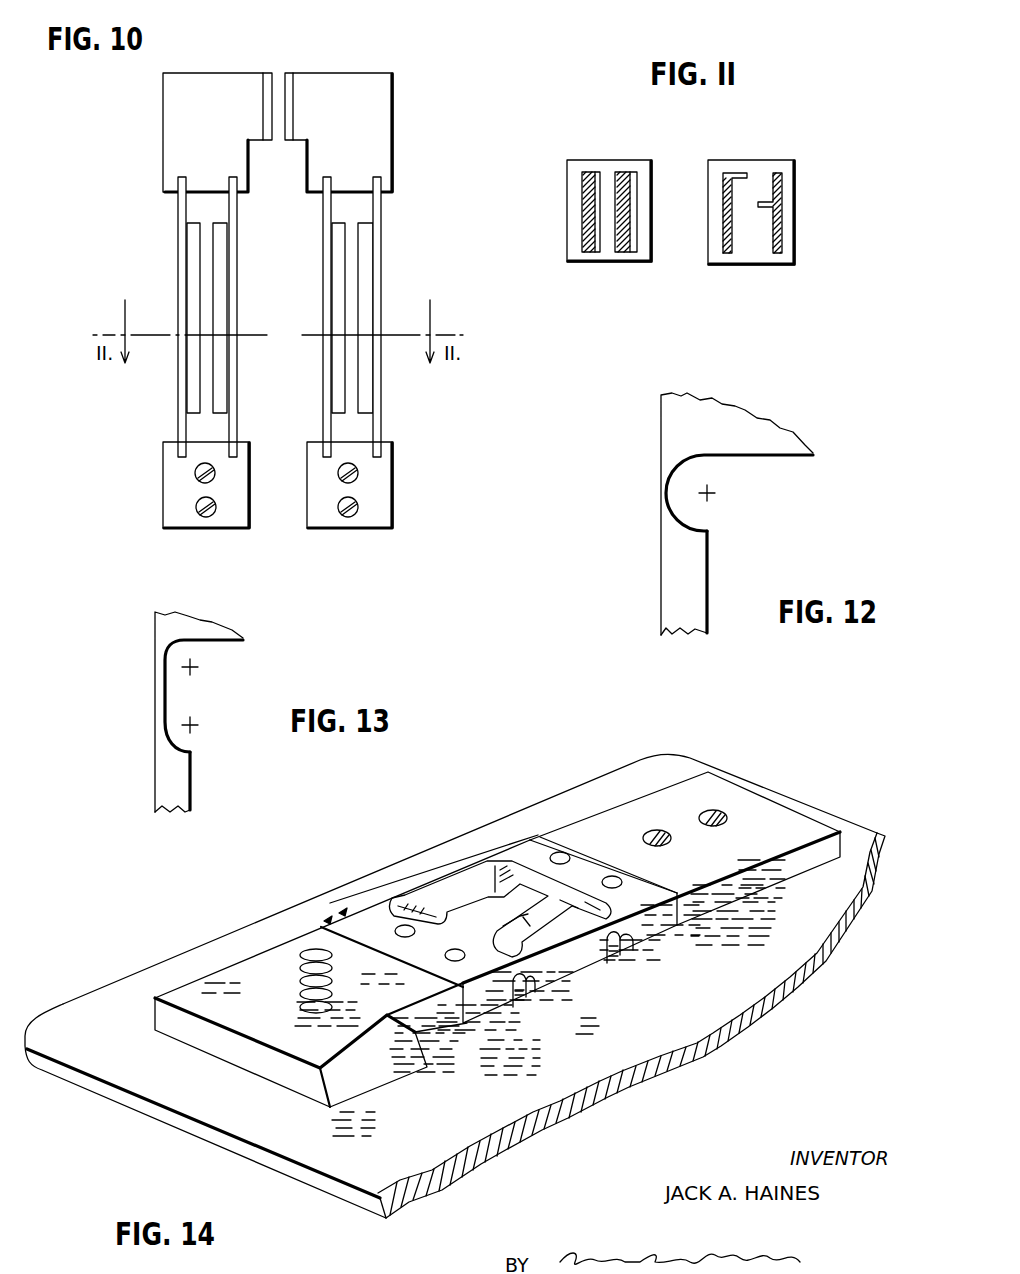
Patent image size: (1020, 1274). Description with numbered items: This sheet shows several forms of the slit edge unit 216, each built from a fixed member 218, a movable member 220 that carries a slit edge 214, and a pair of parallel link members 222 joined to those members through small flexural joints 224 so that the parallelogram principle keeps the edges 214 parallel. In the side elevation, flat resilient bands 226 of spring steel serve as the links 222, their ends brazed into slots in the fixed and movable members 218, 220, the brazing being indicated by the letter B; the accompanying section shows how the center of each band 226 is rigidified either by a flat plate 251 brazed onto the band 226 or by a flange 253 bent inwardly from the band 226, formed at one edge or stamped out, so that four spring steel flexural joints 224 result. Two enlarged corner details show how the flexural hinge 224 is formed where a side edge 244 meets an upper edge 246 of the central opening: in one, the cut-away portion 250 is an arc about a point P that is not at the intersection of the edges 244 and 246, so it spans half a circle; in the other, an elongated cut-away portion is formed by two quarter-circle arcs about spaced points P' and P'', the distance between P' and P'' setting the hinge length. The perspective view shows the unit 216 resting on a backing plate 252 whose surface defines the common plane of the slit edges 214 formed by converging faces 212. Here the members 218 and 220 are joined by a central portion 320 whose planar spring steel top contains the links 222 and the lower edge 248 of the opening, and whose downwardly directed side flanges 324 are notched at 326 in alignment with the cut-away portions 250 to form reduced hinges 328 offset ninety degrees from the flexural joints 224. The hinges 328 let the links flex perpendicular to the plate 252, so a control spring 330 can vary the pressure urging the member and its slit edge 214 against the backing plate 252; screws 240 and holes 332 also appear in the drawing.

In FIG. 14, the angularly converging faces 212 is at (337, 1078).
In FIG. 10, the slit edges 214 is at (280, 104).
In FIG. 14, the slit edges 214 is at (380, 1082).
In FIG. 14, the slit edge unit 216 is at (447, 868).
In FIG. 10, the fixed member 218 is at (224, 532).
In FIG. 14, the fixed member 218 is at (710, 796).
In FIG. 10, the movable member 220 is at (246, 72).
In FIG. 14, the movable member 220 is at (272, 977).
In FIG. 10, the link members 222 is at (162, 253).
In FIG. 14, the link members 222 is at (448, 890).
In FIG. 10, the flexural joint 224 is at (178, 427).
In FIG. 12, the flexural joint 224 is at (661, 490).
In FIG. 13, the flexural joint 224 is at (155, 713).
In FIG. 14, the flexural joint 224 is at (392, 897).
In FIG. 10, the flat resilient bands 226 is at (236, 207).
In FIG. 11, the flat resilient bands 226 is at (582, 226).
In FIG. 10, the screw 240 is at (216, 507).
In FIG. 14, the screw 240 is at (672, 840).
In FIG. 12, the side edges 244 is at (708, 580).
In FIG. 13, the side edges 244 is at (190, 789).
In FIG. 14, the side edges 244 is at (487, 890).
In FIG. 12, the upper edge 246 is at (793, 460).
In FIG. 13, the upper edge 246 is at (222, 645).
In FIG. 14, the upper edge 246 is at (400, 957).
In FIG. 14, the lower edge 248 is at (563, 890).
In FIG. 12, the cut-away portion 250 is at (696, 474).
In FIG. 13, the cut-away portion 250 is at (165, 690).
In FIG. 14, the cut-away portion 250 is at (500, 867).
In FIG. 11, the flat plate 251 is at (625, 172).
In FIG. 11, the flange 253 is at (740, 174).
In FIG. 14, the backing plate 252 is at (687, 1027).
In FIG. 14, the central portion 320 is at (657, 928).
In FIG. 14, the side flanges 324 is at (573, 960).
In FIG. 14, the notch 326 is at (630, 957).
In FIG. 14, the hinge 328 is at (524, 1005).
In FIG. 14, the control spring 330 is at (299, 1004).
In FIG. 14, the hole 332 is at (562, 856).
In FIG. 10, the brazing B is at (232, 178).
In FIG. 12, the point P is at (731, 504).
In FIG. 13, the spaced point P' is at (218, 665).
In FIG. 13, the spaced point P'' is at (217, 730).